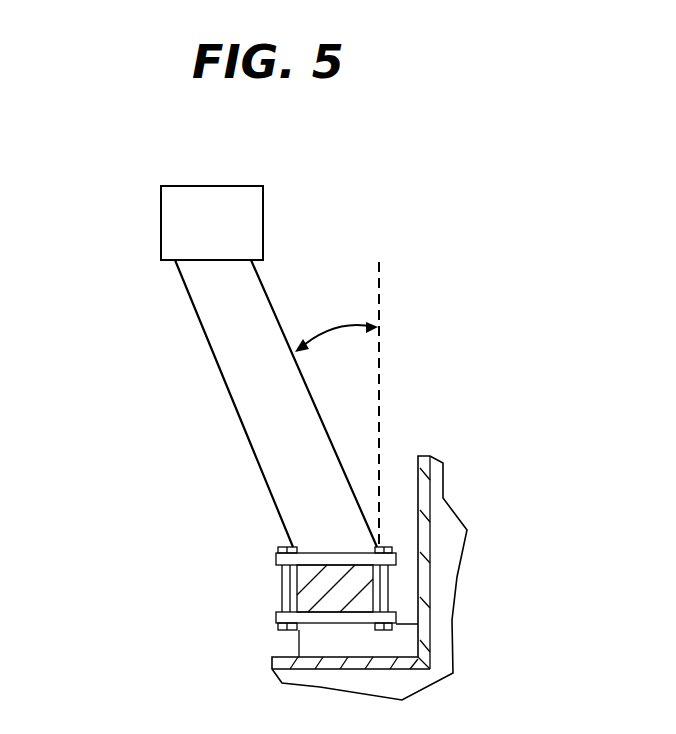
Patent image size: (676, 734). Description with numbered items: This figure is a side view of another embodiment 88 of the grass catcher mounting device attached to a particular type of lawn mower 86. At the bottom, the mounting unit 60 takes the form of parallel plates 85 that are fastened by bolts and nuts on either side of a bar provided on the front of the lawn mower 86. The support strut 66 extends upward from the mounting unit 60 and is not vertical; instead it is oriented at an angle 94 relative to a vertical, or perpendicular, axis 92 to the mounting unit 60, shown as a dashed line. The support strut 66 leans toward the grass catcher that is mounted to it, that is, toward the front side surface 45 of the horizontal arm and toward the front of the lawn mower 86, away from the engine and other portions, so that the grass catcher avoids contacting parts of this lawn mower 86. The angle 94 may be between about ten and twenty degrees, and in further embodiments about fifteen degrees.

The embodiment of the device 88 is at (258, 138).
The front side surface 45 is at (161, 219).
The support strut 66 is at (218, 369).
The axis 92 is at (382, 308).
The angle 94 is at (334, 327).
The parallel plates 85 is at (276, 557).
The mounting unit 60 is at (405, 586).
The lawn mower 86 is at (462, 456).